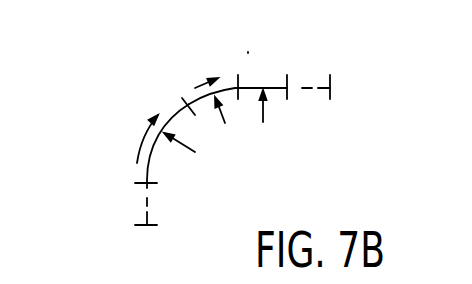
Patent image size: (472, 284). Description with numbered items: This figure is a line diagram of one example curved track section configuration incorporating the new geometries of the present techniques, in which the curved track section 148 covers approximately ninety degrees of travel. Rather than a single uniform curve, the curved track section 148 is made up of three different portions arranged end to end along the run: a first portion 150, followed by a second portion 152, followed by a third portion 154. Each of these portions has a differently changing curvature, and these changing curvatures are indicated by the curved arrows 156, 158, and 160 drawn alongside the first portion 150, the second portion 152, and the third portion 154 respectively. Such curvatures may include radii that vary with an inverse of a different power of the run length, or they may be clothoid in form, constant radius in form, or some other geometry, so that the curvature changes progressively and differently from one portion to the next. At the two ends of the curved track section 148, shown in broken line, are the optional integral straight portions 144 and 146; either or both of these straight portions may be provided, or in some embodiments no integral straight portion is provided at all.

The integral straight portion 144 is at (147, 206).
The integral straight portion 146 is at (305, 88).
The curved track section 148 is at (265, 119).
The first portion 150 is at (153, 155).
The second portion 152 is at (202, 100).
The third portion 154 is at (278, 98).
The changing curvature 156 is at (155, 147).
The changing curvature 158 is at (196, 87).
The changing curvature 160 is at (272, 73).